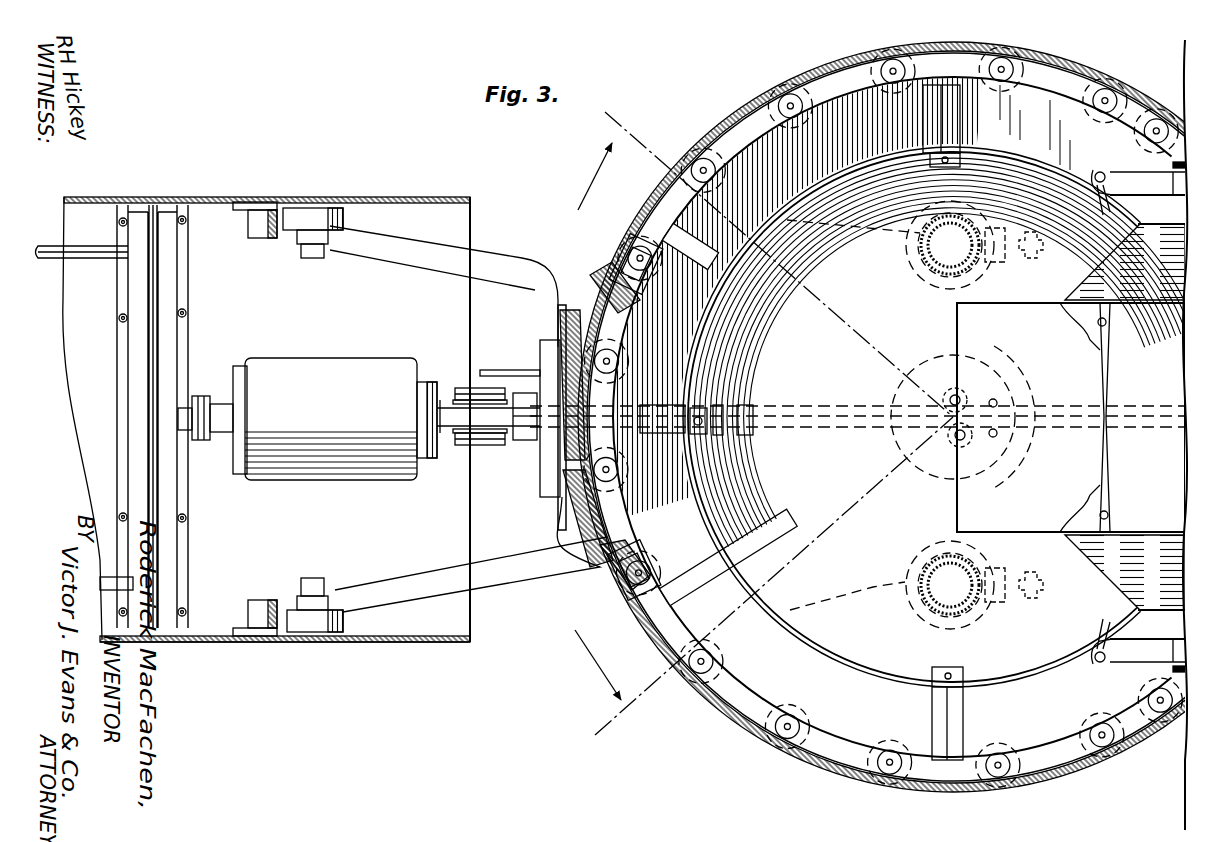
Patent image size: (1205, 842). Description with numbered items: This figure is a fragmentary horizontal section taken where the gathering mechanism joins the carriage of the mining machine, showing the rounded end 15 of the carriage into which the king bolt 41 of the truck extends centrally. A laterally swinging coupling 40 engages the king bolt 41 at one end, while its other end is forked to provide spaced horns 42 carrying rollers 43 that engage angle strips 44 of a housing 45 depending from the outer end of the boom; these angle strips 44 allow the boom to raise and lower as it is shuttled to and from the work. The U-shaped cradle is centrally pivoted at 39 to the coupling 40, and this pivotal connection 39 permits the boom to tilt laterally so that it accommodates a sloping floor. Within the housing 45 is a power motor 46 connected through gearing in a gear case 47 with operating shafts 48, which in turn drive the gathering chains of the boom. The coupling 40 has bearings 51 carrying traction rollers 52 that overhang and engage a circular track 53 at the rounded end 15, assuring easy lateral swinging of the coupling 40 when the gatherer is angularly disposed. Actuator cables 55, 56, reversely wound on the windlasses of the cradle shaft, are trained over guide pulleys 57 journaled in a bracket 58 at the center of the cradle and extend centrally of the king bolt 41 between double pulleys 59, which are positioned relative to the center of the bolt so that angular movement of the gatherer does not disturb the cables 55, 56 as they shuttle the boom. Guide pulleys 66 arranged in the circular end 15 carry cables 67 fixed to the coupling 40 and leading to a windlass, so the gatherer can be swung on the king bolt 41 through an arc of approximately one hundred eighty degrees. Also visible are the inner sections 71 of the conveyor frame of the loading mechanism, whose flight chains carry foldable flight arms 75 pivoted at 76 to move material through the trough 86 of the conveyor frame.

The rounded end 15 is at (665, 198).
The pivot 39 is at (512, 390).
The coupling 40 is at (586, 570).
The king bolt 41 is at (912, 397).
The horns 42 is at (372, 244).
The rollers 43 is at (315, 215).
The angle strips 44 is at (262, 232).
The housing 45 is at (212, 643).
The power motor 46 is at (332, 362).
The gear case 47 is at (130, 413).
The operating shafts 48 is at (82, 258).
The bearings 51 is at (612, 266).
The traction rollers 52 is at (640, 238).
The circular track 53 is at (742, 680).
The actuator cable 55 is at (470, 386).
The actuator cable 56 is at (467, 448).
The guide pulleys 57 is at (460, 385).
The bracket 58 is at (520, 466).
The double pulleys 59 is at (1030, 402).
The guide pulleys 66 is at (718, 170).
The cables 67 is at (656, 210).
The inner sections 71 is at (1145, 192).
The flight arms 75 is at (840, 240).
The pivots 76 is at (1108, 322).
The trough 86 is at (1071, 417).